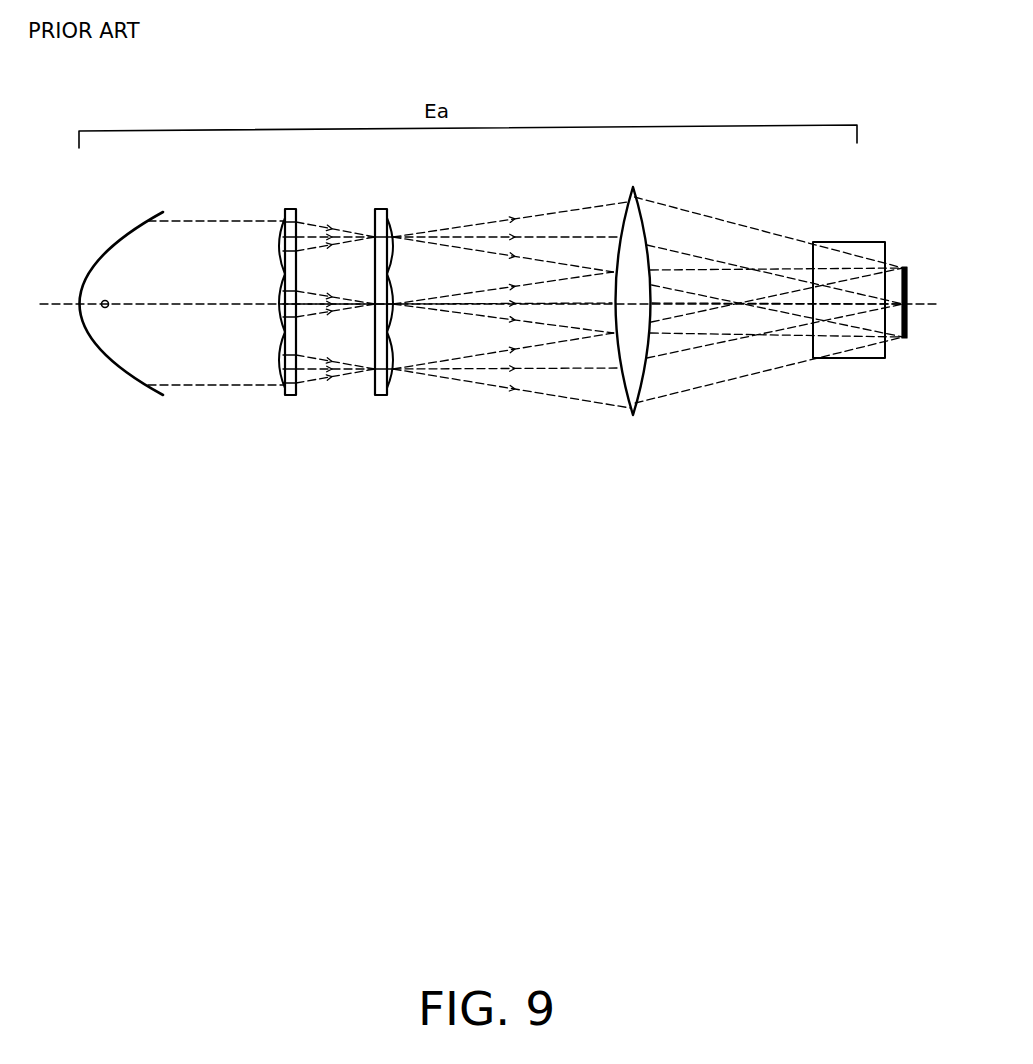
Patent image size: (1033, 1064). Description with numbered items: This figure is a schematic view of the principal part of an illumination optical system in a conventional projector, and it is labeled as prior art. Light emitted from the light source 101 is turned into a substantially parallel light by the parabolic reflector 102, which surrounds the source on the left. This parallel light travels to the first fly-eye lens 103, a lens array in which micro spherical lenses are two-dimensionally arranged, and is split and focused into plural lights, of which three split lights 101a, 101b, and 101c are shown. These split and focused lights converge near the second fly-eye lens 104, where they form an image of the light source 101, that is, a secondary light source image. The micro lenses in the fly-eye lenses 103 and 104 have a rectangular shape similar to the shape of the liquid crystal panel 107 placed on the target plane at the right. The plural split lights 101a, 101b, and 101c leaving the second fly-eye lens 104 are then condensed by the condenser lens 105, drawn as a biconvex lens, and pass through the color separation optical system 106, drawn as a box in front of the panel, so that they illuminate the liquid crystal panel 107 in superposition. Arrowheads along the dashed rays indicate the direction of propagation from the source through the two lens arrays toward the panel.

The light source 101 is at (104, 302).
The split light 101a is at (327, 228).
The split light 101b is at (343, 300).
The split light 101c is at (331, 382).
The parabolic reflector 102 is at (113, 366).
The first fly-eye lens 103 is at (290, 396).
The second fly-eye lens 104 is at (380, 396).
The condenser lens 105 is at (632, 415).
The color separation optical system 106 is at (860, 358).
The liquid crystal panel 107 is at (905, 338).